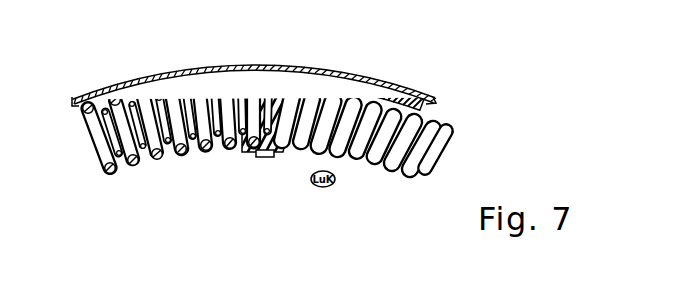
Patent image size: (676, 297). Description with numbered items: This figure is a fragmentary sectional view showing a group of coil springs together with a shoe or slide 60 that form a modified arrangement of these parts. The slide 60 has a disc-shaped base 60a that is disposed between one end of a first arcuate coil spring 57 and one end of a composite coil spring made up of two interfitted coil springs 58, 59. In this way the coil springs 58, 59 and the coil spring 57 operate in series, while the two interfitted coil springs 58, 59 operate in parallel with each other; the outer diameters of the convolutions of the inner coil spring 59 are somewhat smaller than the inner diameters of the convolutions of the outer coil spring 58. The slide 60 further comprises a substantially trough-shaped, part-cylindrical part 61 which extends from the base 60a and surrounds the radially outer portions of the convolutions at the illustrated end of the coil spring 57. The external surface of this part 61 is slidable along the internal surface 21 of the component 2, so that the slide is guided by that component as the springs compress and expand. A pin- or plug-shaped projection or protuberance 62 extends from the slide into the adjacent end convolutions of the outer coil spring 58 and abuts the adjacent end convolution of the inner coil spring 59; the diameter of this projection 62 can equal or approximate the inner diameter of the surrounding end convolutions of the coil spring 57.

The component 2 is at (92, 80).
The internal surface 21 is at (78, 110).
The first arcuate coil spring 57 is at (358, 152).
The outer coil spring 58 is at (200, 158).
The inner coil spring 59 is at (141, 162).
The slide 60 is at (280, 59).
The disc-shaped base 60a is at (260, 151).
The trough-shaped part 61 is at (357, 76).
The pin-shaped projection 62 is at (218, 66).